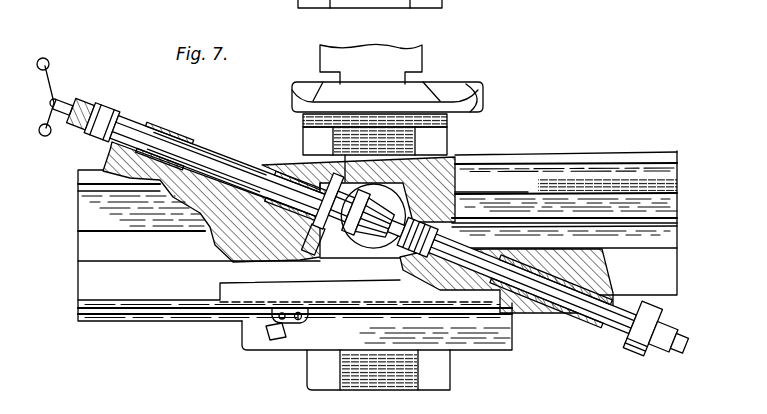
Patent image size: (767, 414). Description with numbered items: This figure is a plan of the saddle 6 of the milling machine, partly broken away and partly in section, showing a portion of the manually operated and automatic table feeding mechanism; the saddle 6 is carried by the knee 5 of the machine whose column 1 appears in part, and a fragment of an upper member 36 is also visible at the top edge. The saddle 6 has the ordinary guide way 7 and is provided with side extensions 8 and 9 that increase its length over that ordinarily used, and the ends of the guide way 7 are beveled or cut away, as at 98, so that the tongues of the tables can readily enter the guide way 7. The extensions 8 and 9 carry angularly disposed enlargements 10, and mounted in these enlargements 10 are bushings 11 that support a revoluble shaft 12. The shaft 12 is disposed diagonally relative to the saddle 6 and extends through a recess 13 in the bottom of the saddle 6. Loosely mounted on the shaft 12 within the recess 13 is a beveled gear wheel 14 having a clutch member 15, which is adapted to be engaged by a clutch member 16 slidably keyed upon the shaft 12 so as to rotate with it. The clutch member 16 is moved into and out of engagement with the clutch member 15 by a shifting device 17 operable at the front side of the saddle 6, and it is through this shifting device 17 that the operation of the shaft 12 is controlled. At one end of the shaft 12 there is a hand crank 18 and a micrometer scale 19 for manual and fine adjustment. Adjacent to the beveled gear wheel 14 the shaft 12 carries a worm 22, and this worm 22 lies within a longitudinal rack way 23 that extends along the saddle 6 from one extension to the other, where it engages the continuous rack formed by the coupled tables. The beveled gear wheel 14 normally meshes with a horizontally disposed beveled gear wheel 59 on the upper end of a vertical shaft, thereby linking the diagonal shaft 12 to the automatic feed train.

The column 1 is at (387, 65).
The knee 5 is at (392, 365).
The saddle 6 is at (374, 348).
The guide way 7 is at (566, 152).
The side extension 8 is at (148, 326).
The side extension 9 is at (564, 168).
The angularly disposed enlargement 10 is at (506, 305).
The bushing 11 is at (226, 145).
The revoluble shaft 12 is at (228, 138).
The recess 13 is at (412, 108).
The beveled gear wheel 14 is at (391, 103).
The clutch member 15 is at (367, 122).
The clutch member 16 is at (214, 194).
The shifting device 17 is at (280, 343).
The hand crank 18 is at (65, 66).
The micrometer scale 19 is at (99, 85).
The worm 22 is at (384, 177).
The longitudinal rack way 23 is at (677, 216).
The upper member 36 is at (453, 5).
The beveled gear wheel 59 is at (497, 288).
The beveled end of guide way 98 is at (566, 161).